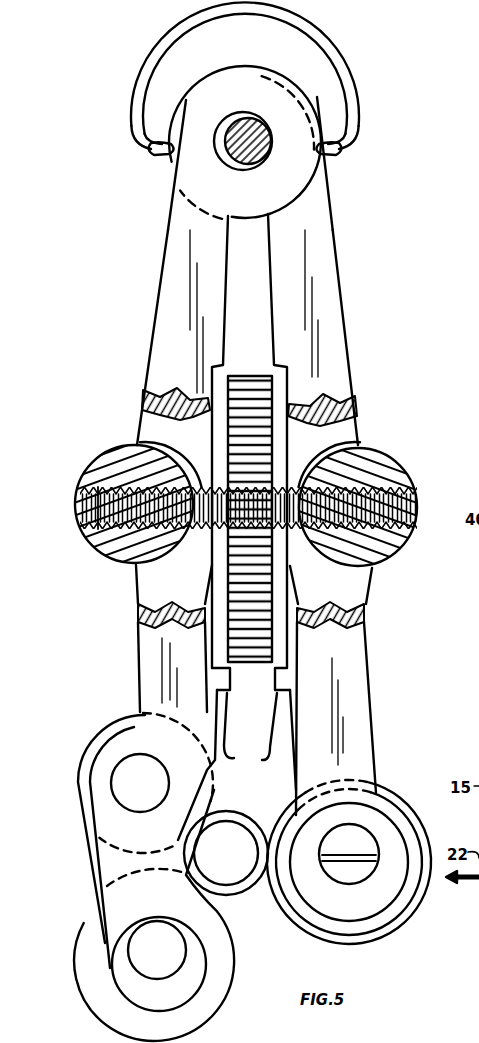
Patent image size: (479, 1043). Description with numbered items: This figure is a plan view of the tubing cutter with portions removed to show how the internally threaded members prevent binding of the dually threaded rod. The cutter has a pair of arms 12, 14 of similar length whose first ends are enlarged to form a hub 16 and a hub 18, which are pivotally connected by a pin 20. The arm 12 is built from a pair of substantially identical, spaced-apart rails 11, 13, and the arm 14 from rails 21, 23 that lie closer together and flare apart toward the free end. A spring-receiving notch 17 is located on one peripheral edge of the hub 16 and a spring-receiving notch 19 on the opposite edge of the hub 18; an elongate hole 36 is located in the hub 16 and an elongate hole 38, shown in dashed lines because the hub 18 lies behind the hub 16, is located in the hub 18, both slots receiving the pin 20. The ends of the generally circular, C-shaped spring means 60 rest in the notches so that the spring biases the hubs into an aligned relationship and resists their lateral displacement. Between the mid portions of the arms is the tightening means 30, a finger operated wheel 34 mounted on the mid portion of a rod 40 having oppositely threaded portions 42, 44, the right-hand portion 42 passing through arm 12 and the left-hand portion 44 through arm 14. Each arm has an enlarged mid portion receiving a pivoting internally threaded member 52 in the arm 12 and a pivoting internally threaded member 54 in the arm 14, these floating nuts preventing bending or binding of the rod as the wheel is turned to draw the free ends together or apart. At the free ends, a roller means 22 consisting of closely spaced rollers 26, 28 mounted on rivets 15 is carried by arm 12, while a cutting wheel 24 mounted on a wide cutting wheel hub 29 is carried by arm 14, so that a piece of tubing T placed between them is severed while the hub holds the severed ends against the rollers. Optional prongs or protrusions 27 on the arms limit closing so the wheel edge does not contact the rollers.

The spring means 60 is at (242, 14).
The spring-receiving notch 19 is at (150, 146).
The spring-receiving notch 17 is at (342, 148).
The elongate hole 36 is at (218, 150).
The elongate hole 38 is at (280, 147).
The pin 20 is at (247, 117).
The hub 18 is at (180, 97).
The hub 16 is at (310, 97).
The arm 12 is at (133, 335).
The arm 14 is at (355, 335).
The finger operated wheel 34 is at (252, 665).
The tightening means 30 is at (203, 560).
The rail 13 is at (145, 410).
The rail 23 is at (355, 413).
The rail 11 is at (145, 370).
The rail 21 is at (357, 386).
The threaded portion 42 is at (138, 432).
The threaded portion 44 is at (350, 424).
The pivoting internally threaded member 52 is at (140, 575).
The pivoting internally threaded member 54 is at (400, 552).
The rod 40 is at (97, 503).
The prong or protrusion 27 is at (226, 748).
The roller 26 is at (105, 723).
The roller means 22 is at (78, 877).
The rivet 15 is at (112, 786).
The roller 28 is at (235, 991).
The tubing T is at (239, 808).
The cutting wheel hub 29 is at (394, 810).
The cutting wheel 24 is at (420, 903).